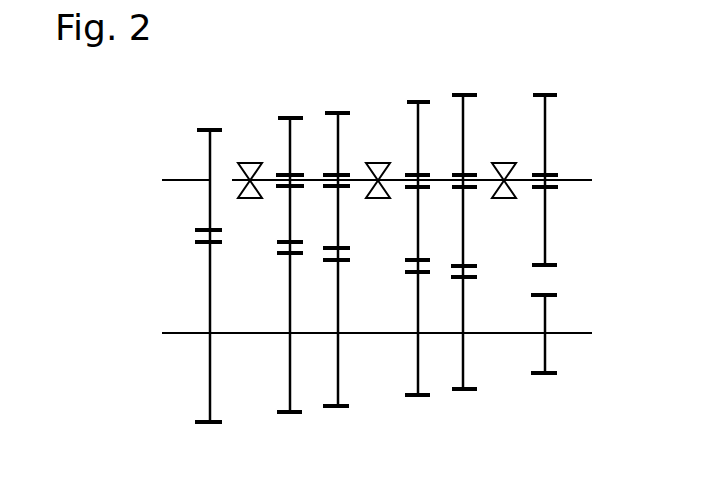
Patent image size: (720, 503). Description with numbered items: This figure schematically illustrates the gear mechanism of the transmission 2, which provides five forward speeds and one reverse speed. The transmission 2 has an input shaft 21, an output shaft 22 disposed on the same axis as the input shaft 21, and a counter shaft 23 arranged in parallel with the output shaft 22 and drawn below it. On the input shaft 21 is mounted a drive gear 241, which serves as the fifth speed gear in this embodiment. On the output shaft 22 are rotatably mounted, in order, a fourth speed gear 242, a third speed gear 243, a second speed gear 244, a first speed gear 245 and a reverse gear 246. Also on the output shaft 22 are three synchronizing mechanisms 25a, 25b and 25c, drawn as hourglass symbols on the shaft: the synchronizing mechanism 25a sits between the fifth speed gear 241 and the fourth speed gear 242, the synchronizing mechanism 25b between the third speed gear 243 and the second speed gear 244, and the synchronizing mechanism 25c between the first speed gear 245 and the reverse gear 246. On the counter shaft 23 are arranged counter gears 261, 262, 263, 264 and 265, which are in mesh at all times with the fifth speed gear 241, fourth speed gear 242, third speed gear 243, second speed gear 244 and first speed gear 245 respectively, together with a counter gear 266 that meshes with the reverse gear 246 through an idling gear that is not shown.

The transmission 2 is at (134, 250).
The input shaft 21 is at (183, 180).
The output shaft 22 is at (582, 180).
The counter shaft 23 is at (181, 335).
The drive gear 241 is at (198, 128).
The fourth speed gear 242 is at (284, 117).
The third speed gear 243 is at (346, 112).
The second speed gear 244 is at (412, 101).
The first speed gear 245 is at (462, 94).
The reverse gear 246 is at (548, 94).
The synchronizing mechanism 25a is at (250, 162).
The synchronizing mechanism 25b is at (378, 162).
The synchronizing mechanism 25c is at (506, 162).
The counter gear 261 is at (200, 425).
The counter gear 262 is at (283, 415).
The counter gear 263 is at (343, 409).
The counter gear 264 is at (425, 398).
The counter gear 265 is at (472, 392).
The counter gear 266 is at (553, 376).